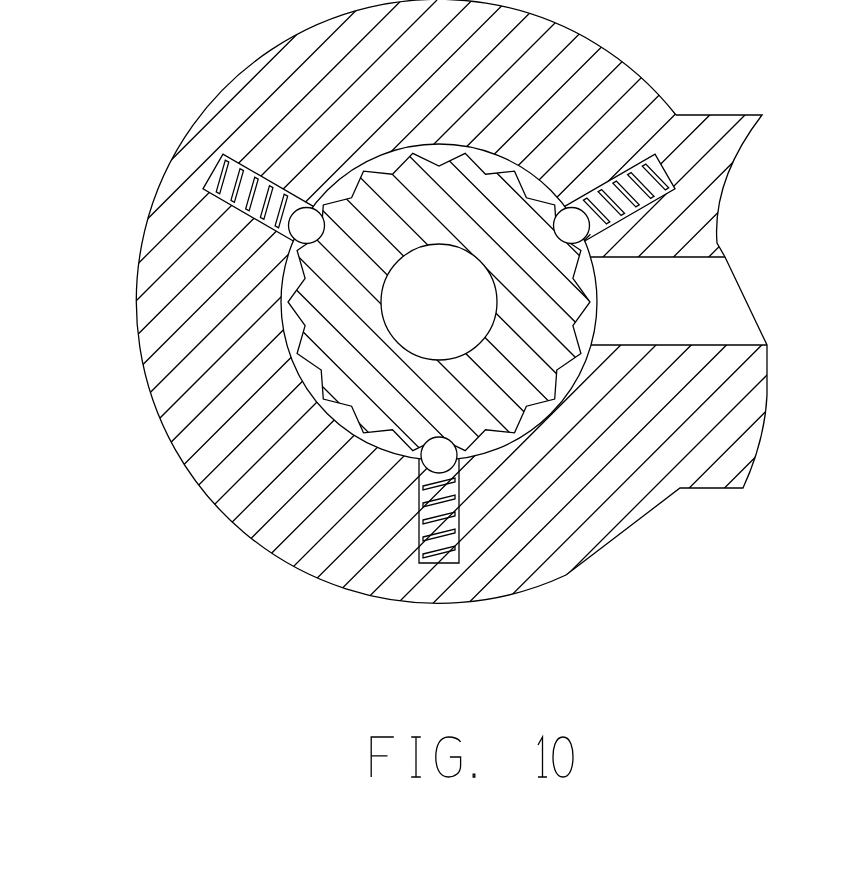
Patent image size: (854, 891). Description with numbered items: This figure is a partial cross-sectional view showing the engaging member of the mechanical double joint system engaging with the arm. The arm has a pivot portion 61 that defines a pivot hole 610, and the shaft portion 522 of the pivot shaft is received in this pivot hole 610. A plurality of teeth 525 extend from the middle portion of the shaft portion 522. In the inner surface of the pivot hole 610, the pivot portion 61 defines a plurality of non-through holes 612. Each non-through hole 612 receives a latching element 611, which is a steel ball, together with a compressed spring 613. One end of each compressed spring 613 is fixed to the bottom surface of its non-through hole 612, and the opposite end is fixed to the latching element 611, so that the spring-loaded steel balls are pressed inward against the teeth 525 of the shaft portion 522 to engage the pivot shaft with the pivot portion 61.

The pivot portion 61 is at (230, 397).
The pivot hole 610 is at (292, 330).
The latching element 611 is at (300, 226).
The non-through hole 612 is at (240, 188).
The compressed spring 613 is at (226, 145).
The shaft portion 522 is at (593, 345).
The teeth 525 is at (520, 432).